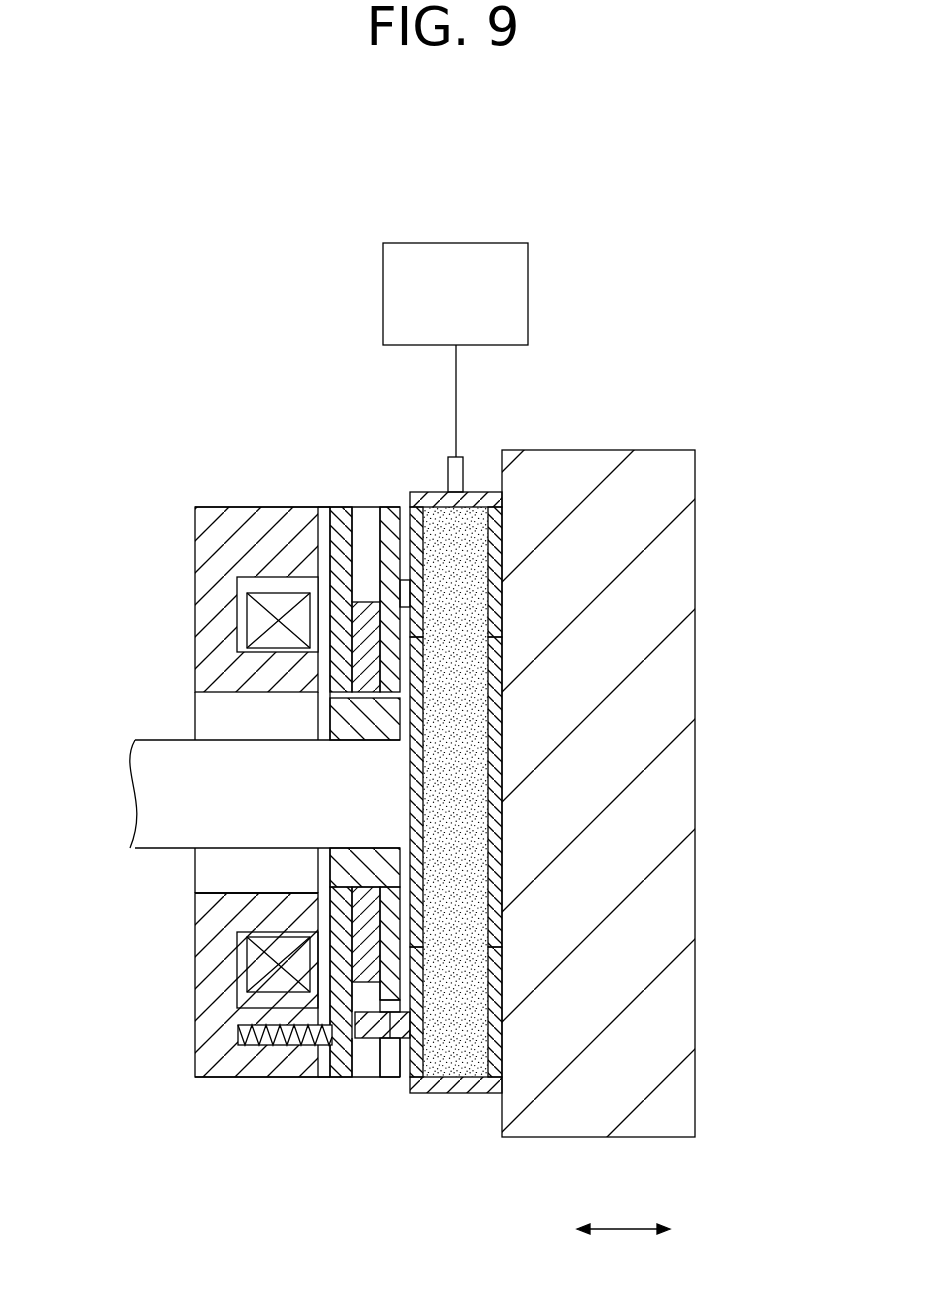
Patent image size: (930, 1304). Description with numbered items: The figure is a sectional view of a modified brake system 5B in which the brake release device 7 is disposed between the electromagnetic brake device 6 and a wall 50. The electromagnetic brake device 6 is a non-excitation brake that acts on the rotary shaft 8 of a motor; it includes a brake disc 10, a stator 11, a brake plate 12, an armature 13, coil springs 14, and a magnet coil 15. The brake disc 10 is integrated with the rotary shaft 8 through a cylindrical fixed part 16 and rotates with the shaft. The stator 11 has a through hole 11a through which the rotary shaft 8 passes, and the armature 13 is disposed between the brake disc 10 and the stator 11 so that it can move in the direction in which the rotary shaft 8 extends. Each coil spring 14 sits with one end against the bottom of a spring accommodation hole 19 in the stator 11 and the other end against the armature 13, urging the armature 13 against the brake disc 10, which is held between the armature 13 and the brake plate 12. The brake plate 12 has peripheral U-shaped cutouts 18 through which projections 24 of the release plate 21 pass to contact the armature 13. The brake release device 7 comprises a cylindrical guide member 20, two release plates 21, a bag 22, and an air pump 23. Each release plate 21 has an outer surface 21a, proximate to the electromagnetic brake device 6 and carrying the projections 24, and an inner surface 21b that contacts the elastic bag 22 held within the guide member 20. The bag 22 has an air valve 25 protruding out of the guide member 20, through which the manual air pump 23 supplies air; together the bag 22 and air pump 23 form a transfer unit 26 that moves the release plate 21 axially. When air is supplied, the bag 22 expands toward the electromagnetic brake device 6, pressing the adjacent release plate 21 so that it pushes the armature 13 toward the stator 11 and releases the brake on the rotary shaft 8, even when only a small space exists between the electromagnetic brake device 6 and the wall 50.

The brake system 5B is at (693, 300).
The electromagnetic brake device 6 is at (199, 492).
The brake release device 7 is at (371, 230).
The rotary shaft 8 is at (148, 795).
The brake disc 10 is at (370, 612).
The stator 11 is at (232, 542).
The through hole 11a is at (210, 888).
The brake plate 12 is at (390, 525).
The armature 13 is at (340, 545).
The coil spring 14 is at (296, 1043).
The magnet coil 15 is at (263, 622).
The fixed part 16 is at (335, 718).
The cutout 18 is at (392, 1040).
The spring accommodation hole 19 is at (247, 1045).
The guide member 20 is at (448, 1093).
The release plate 21 is at (415, 800).
The outer surface 21a is at (405, 525).
The inner surface 21b is at (432, 1086).
The bag 22 is at (471, 525).
The air pump 23 is at (528, 290).
The projection 24 is at (367, 1030).
The air valve 25 is at (462, 465).
The transfer unit 26 is at (384, 303).
The wall 50 is at (682, 804).